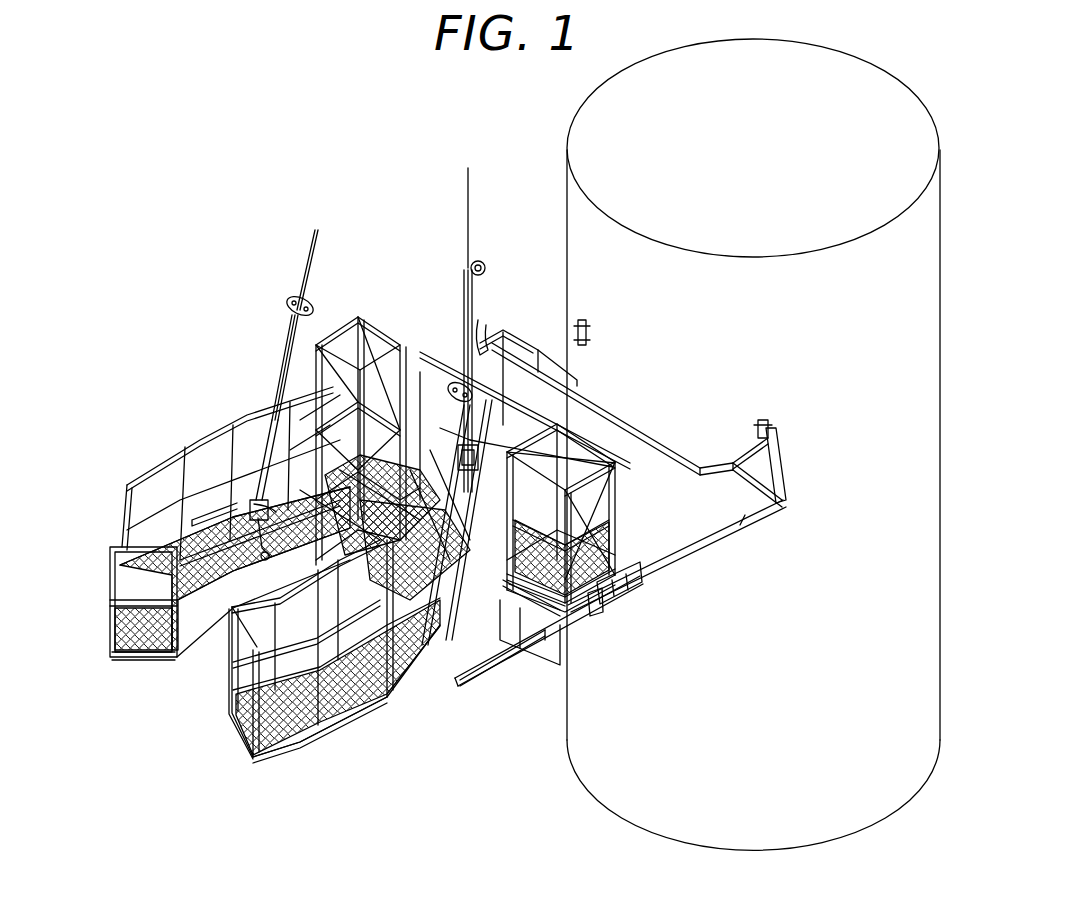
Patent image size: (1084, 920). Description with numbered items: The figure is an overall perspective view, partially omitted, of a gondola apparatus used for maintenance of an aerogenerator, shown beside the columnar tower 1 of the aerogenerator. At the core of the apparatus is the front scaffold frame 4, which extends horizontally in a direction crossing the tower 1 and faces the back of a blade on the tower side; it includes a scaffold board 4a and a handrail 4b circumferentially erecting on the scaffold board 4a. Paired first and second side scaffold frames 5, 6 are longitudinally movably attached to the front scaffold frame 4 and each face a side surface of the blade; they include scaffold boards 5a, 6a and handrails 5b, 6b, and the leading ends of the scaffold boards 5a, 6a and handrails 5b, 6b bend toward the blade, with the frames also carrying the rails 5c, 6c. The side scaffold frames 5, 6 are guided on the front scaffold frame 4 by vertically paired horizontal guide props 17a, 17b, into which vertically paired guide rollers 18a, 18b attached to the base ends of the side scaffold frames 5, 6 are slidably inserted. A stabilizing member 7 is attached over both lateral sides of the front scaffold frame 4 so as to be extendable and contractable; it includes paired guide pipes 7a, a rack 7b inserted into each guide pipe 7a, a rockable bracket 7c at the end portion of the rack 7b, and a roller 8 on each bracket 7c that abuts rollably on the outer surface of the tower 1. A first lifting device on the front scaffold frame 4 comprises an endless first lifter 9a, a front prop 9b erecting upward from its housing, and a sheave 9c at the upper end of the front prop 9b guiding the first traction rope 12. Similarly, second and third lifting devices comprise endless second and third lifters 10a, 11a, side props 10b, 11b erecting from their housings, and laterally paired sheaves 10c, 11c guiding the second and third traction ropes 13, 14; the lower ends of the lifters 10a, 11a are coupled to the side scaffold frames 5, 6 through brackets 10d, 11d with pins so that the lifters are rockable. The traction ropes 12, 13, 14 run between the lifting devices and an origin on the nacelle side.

The tower 1 is at (625, 783).
The front scaffold frame 4 is at (620, 505).
The scaffold board 4a is at (620, 548).
The handrail 4b is at (605, 462).
The first side scaffold frame 5 is at (116, 494).
The scaffold board 5a is at (150, 650).
The handrail 5b is at (142, 468).
The left platform inner rail 5c is at (232, 392).
The second side scaffold frame 6 is at (340, 742).
The scaffold board 6a is at (292, 748).
The handrail 6b is at (230, 655).
The front platform inner rail 6c is at (328, 560).
The stabilizing member 7 is at (738, 538).
The guide pipe 7a is at (625, 612).
The rack 7b is at (688, 560).
The rockable bracket 7c is at (780, 455).
The roller 8 is at (590, 335).
The first lifter 9a is at (512, 430).
The front prop 9b is at (462, 295).
The sheave 9c is at (480, 262).
The second lifter 10a is at (230, 435).
The side prop 10b is at (286, 375).
The sheave 10c is at (284, 305).
The bracket 10d is at (272, 565).
The third lifter 11a is at (430, 610).
The side prop 11b is at (488, 412).
The sheave 11c is at (472, 386).
The bracket 11d is at (445, 630).
The first traction rope 12 is at (465, 180).
The second traction rope 13 is at (312, 245).
The third traction rope 14 is at (486, 330).
The horizontal guide prop 17a is at (590, 446).
The horizontal guide prop 17b is at (530, 605).
The guide roller 18a is at (350, 320).
The guide roller 18b is at (505, 590).